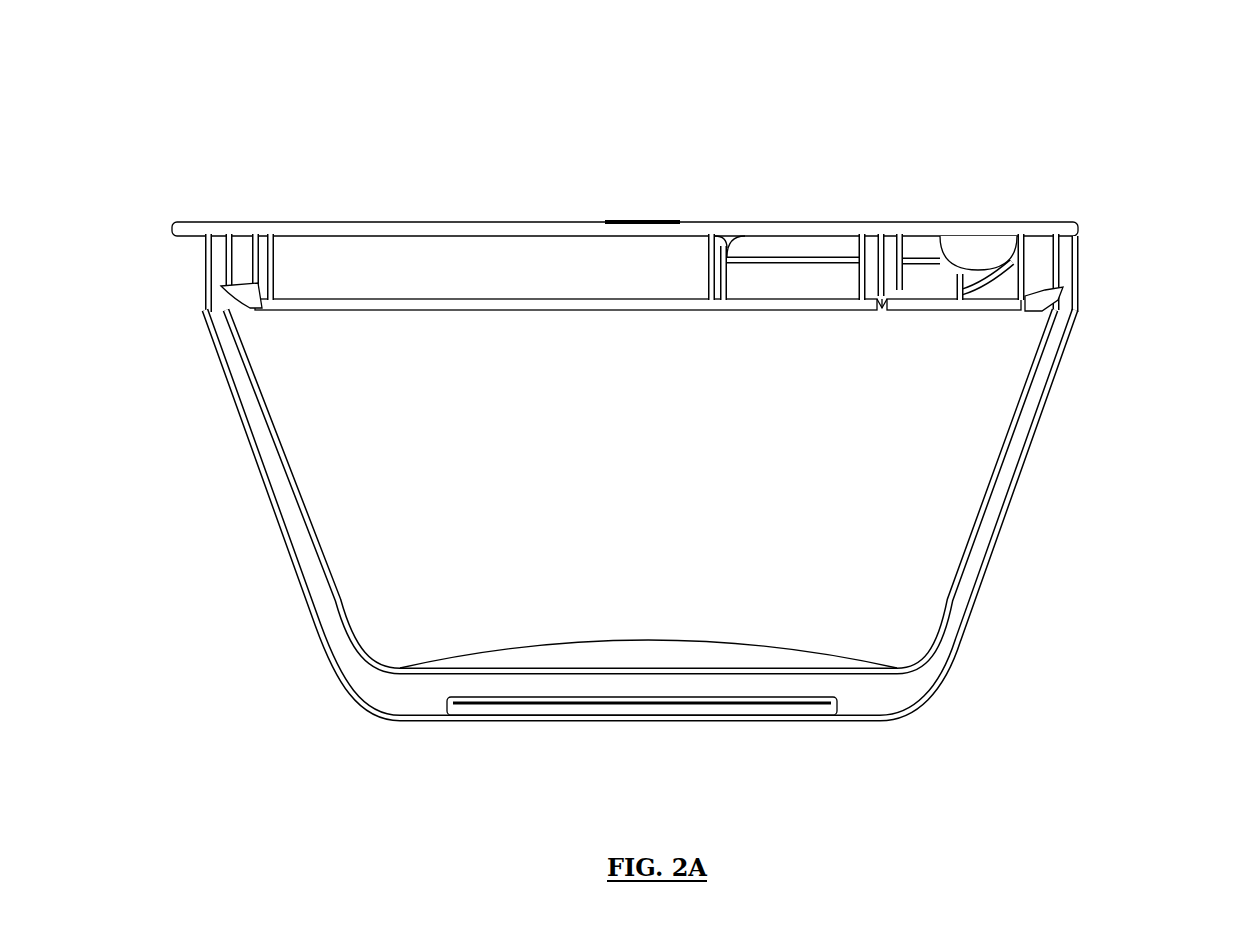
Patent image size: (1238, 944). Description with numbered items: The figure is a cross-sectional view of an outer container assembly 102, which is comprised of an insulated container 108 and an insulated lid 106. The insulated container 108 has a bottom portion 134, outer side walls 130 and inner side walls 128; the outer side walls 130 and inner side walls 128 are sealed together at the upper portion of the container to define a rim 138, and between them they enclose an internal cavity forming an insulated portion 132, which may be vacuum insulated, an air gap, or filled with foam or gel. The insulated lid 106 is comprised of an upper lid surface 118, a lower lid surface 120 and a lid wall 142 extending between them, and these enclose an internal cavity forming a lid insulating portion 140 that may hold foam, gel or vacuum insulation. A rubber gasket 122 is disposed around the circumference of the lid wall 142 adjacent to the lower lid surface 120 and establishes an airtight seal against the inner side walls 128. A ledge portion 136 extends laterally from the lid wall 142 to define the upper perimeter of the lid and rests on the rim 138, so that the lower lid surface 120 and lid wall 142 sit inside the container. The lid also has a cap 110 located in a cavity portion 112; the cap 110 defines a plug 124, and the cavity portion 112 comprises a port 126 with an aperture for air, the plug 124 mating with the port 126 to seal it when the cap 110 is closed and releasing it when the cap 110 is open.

The outer container assembly 102 is at (1192, 98).
The insulated lid 106 is at (345, 147).
The insulated container 108 is at (230, 482).
The cap 110 is at (862, 225).
The cavity portion 112 is at (985, 234).
The upper lid surface 118 is at (462, 222).
The lower lid surface 120 is at (553, 308).
The rubber gasket 122 is at (228, 300).
The plug 124 is at (882, 308).
The port 126 is at (890, 312).
The inner side walls 128 is at (990, 493).
The outer side walls 130 is at (1035, 433).
The insulated portion 132 is at (325, 608).
The bottom portion 134 is at (513, 720).
The ledge portion 136 is at (1076, 231).
The rim 138 is at (207, 240).
The lid insulating portion 140 is at (543, 270).
The lid wall 142 is at (257, 270).